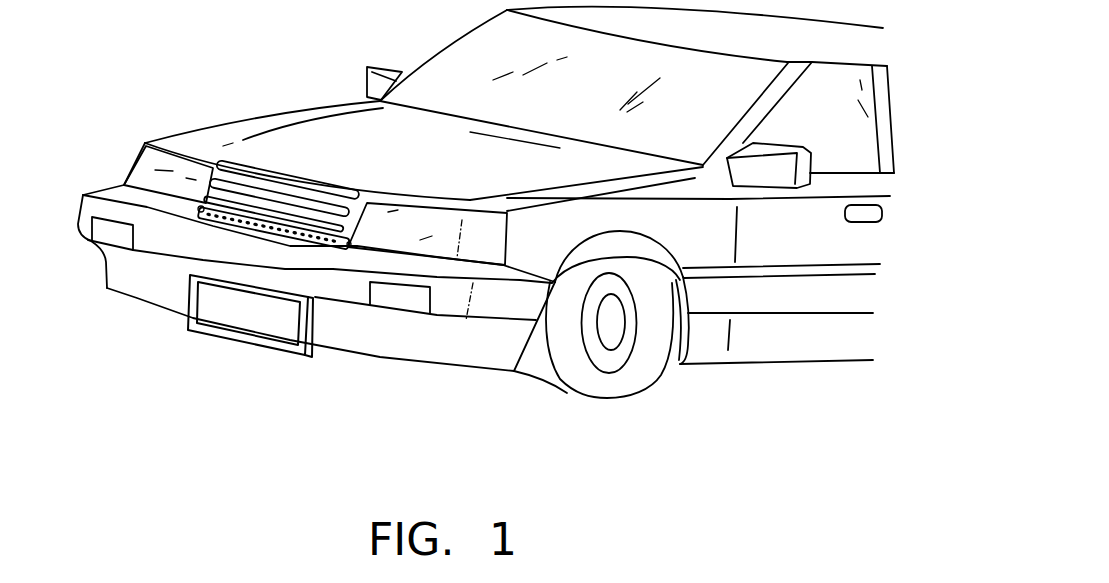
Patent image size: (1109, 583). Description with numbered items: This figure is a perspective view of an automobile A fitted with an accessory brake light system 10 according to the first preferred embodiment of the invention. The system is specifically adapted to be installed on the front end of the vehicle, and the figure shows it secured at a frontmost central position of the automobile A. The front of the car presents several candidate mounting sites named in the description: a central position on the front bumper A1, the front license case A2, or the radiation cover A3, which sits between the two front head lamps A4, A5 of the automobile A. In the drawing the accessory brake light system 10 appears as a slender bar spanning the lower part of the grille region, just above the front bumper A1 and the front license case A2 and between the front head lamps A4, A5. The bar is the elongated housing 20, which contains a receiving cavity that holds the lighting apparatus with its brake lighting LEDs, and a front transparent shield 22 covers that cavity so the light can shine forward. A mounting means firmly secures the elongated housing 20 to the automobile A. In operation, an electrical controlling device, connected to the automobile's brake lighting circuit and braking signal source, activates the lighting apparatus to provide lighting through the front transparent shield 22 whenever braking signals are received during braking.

The automobile A is at (350, 122).
The front bumper A1 is at (163, 295).
The front license case A2 is at (255, 332).
The radiation cover A3 is at (292, 200).
The front head lamp A4 is at (143, 178).
The front head lamp A5 is at (433, 240).
The accessory brake light system 10 is at (323, 250).
The elongated housing 20 is at (357, 247).
The front transparent shield 22 is at (200, 210).